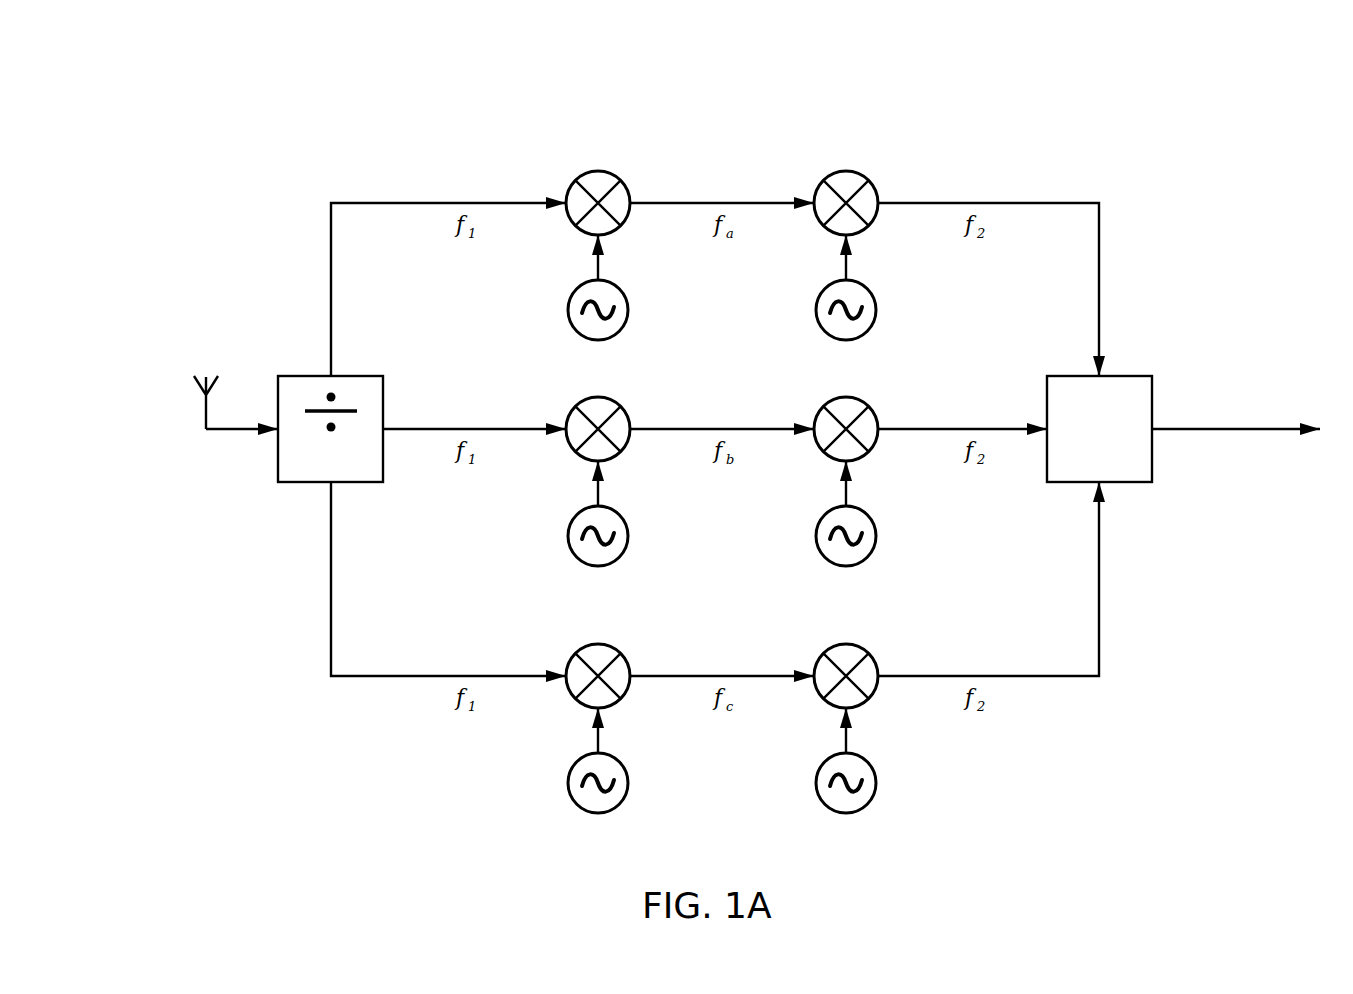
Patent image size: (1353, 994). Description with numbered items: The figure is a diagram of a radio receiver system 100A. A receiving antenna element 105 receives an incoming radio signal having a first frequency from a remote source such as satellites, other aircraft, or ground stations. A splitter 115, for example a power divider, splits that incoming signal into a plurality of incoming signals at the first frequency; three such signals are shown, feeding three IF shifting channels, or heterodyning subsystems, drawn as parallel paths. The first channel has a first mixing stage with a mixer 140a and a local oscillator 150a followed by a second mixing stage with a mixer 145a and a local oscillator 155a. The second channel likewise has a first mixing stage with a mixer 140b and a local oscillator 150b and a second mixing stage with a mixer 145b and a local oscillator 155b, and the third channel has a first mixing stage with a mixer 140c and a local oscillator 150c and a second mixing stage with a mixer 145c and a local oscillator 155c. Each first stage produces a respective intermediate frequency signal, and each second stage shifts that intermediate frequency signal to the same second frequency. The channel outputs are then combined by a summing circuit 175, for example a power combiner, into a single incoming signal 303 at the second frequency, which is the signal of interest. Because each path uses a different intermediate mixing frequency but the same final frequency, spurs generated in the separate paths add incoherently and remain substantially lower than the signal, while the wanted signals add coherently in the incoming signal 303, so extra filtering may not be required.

The radio receiver system 100A is at (449, 62).
The receiving antenna element 105 is at (206, 412).
The splitter 115 is at (348, 467).
The mixer 140a is at (599, 171).
The mixer 140b is at (599, 397).
The mixer 140c is at (599, 644).
The mixer 145a is at (847, 171).
The mixer 145b is at (847, 397).
The mixer 145c is at (847, 644).
The local oscillator 150a is at (568, 310).
The local oscillator 150b is at (568, 536).
The local oscillator 150c is at (568, 783).
The local oscillator 155a is at (816, 310).
The local oscillator 155b is at (816, 536).
The local oscillator 155c is at (816, 783).
The summing circuit 175 is at (1116, 468).
The single incoming signal 303 is at (1200, 429).